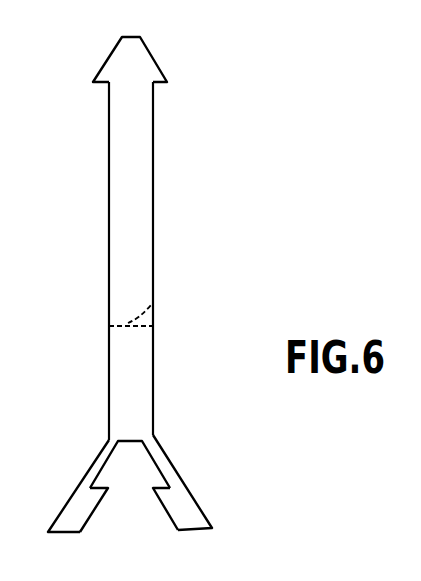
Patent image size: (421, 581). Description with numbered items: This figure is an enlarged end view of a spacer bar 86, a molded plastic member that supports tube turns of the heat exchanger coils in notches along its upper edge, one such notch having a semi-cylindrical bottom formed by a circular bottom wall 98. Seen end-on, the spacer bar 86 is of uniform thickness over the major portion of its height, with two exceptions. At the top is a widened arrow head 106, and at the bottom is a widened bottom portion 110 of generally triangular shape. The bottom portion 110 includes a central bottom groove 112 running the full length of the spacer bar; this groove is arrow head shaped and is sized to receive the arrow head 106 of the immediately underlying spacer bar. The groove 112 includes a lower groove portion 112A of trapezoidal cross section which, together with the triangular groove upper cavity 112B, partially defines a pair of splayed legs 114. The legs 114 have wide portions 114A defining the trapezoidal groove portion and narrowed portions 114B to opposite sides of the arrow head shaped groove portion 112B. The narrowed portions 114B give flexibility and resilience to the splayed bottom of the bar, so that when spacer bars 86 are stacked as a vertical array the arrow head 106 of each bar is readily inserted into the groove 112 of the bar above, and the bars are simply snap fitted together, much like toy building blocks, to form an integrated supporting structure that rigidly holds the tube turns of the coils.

The spacer bar 86 is at (156, 198).
The circular bottom wall 98 is at (157, 303).
The arrow head 106 is at (163, 67).
The widened bottom portion 110 is at (169, 304).
The central bottom groove 112 is at (139, 515).
The lower groove portion 112A is at (113, 507).
The groove upper cavity 112B is at (120, 460).
The splayed legs 114 is at (199, 503).
The wide portions 114A is at (192, 517).
The narrowed portions 114B is at (207, 473).